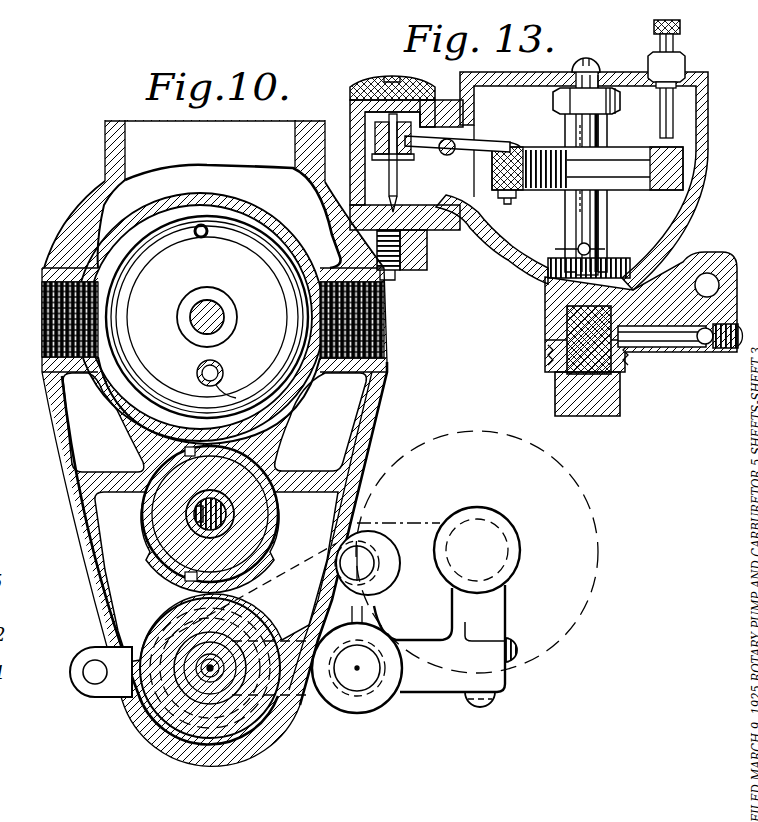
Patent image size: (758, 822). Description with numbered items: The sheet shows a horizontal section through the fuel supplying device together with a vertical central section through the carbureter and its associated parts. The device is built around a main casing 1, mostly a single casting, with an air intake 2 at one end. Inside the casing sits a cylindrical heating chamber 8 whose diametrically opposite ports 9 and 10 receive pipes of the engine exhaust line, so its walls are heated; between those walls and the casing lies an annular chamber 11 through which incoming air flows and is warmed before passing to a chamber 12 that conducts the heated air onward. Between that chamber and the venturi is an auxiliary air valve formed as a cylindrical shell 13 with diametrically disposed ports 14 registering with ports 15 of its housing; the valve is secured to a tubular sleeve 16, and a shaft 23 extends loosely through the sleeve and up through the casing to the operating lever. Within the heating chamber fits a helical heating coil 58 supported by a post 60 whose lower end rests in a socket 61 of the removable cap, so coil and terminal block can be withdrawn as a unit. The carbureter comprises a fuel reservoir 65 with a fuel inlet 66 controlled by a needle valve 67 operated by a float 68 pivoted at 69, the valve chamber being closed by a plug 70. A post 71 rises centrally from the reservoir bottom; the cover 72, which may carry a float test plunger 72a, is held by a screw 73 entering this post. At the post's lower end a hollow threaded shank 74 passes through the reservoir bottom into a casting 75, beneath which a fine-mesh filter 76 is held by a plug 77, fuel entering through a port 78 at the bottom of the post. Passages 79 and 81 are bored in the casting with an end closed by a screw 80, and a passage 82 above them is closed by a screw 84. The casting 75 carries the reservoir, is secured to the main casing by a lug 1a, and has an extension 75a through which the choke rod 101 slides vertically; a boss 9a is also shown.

In FIG. 10, the main casing 1 is at (68, 471).
In FIG. 10, the lug 1a is at (385, 588).
In FIG. 10, the air intake 2 is at (268, 137).
In FIG. 10, the heating chamber 8 is at (242, 202).
In FIG. 10, the port 9 is at (40, 328).
In FIG. 10, the port 10 is at (372, 328).
In FIG. 10, the annular chamber 11 is at (214, 443).
In FIG. 10, the chamber 12 is at (168, 582).
In FIG. 10, the auxiliary air valve 13 is at (210, 514).
In FIG. 10, the ports 14 is at (218, 525).
In FIG. 10, the ports 15 is at (137, 523).
In FIG. 10, the tubular shaft or sleeve 16 is at (213, 498).
In FIG. 10, the shaft 23 is at (196, 509).
In FIG. 10, the heating coil 58 is at (130, 284).
In FIG. 10, the post 60 is at (228, 313).
In FIG. 10, the socket 61 is at (180, 319).
In FIG. 10, the fuel reservoir 65 is at (590, 498).
In FIG. 13, the fuel reservoir 65 is at (690, 234).
In FIG. 13, the fuel inlet 66 is at (415, 264).
In FIG. 13, the needle valve 67 is at (390, 182).
In FIG. 13, the float 68 is at (507, 150).
In FIG. 13, the pivot 69 is at (447, 157).
In FIG. 13, the plug 70 is at (396, 86).
In FIG. 13, the post 71 is at (582, 222).
In FIG. 13, the top or cover 72 is at (613, 84).
In FIG. 13, the float test plunger 72a is at (685, 79).
In FIG. 13, the screw 73 is at (594, 62).
In FIG. 13, the hollow screw-threaded shank 74 is at (562, 292).
In FIG. 10, the casting 75 is at (494, 620).
In FIG. 13, the casting 75 is at (668, 354).
In FIG. 10, the extension 75a is at (108, 698).
In FIG. 13, the filter 76 is at (562, 334).
In FIG. 13, the plug 77 is at (565, 390).
In FIG. 13, the port 78 is at (578, 250).
In FIG. 13, the passage 79 is at (681, 348).
In FIG. 10, the screw 80 is at (482, 706).
In FIG. 13, the screw 80 is at (742, 348).
In FIG. 13, the passage 81 is at (706, 345).
In FIG. 13, the passage 82 is at (709, 283).
In FIG. 10, the screw 84 is at (515, 668).
In FIG. 10, the boss 9a is at (364, 710).
In FIG. 10, the rod 101 is at (93, 668).